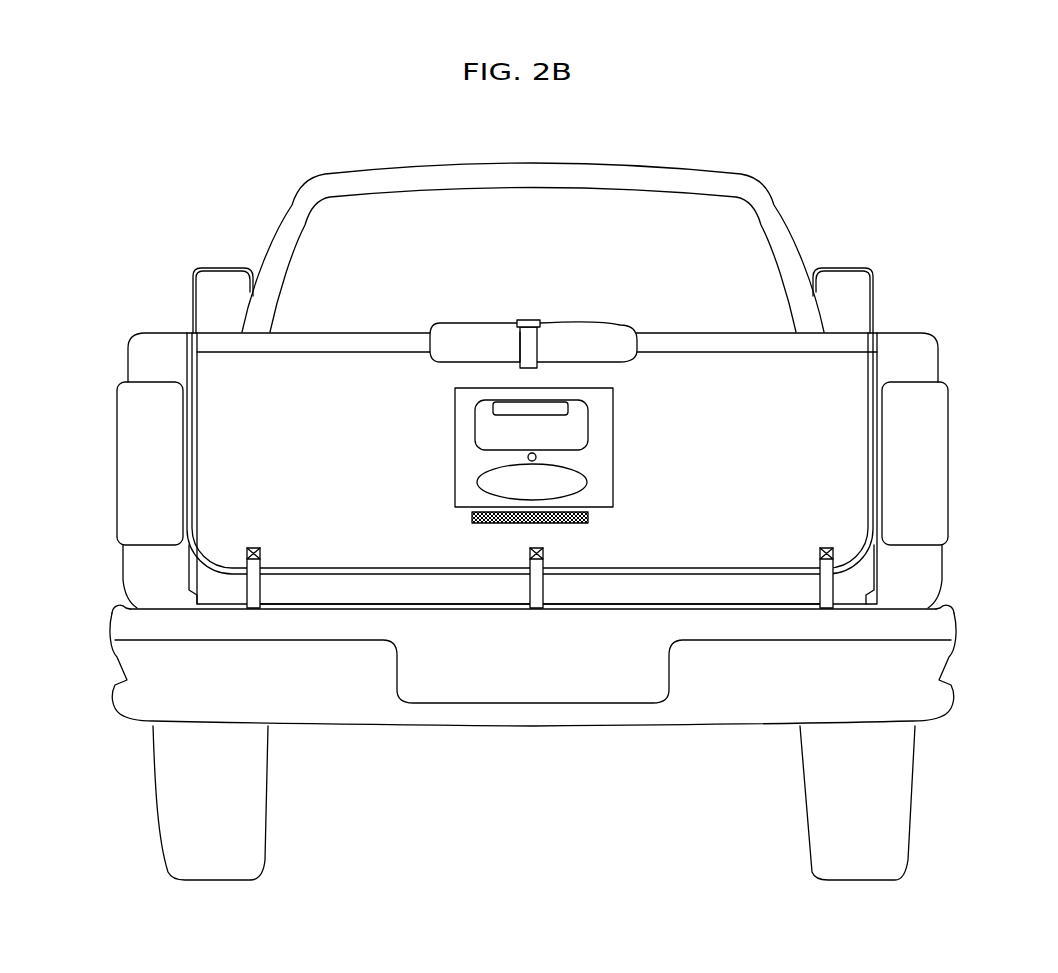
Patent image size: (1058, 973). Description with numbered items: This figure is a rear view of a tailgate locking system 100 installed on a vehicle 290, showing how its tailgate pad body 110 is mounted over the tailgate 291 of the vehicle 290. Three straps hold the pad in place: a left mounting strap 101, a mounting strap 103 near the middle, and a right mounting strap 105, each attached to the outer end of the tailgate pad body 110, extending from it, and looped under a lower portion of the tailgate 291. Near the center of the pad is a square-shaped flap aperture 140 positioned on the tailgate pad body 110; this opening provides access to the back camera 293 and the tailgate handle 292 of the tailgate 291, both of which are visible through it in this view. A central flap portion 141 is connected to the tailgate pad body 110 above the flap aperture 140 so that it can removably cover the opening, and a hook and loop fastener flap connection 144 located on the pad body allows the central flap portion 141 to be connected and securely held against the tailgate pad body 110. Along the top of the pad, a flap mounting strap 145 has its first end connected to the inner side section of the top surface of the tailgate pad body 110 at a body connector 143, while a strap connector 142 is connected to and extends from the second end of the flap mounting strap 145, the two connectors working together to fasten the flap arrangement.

The tailgate locking system 100 is at (876, 238).
The tailgate pad body 110 is at (186, 560).
The left mounting strap 101 is at (267, 597).
The mounting strap 103 is at (546, 598).
The right mounting strap 105 is at (818, 596).
The flap aperture 140 is at (617, 405).
The central flap portion 141 is at (600, 332).
The strap connector 142 is at (533, 318).
The body connector 143 is at (524, 318).
The hook and loop fastener flap connection 144 is at (593, 517).
The flap mounting strap 145 is at (517, 342).
The vehicle 290 is at (268, 220).
The tailgate 291 is at (438, 588).
The tailgate handle 292 is at (520, 458).
The back camera 293 is at (492, 403).